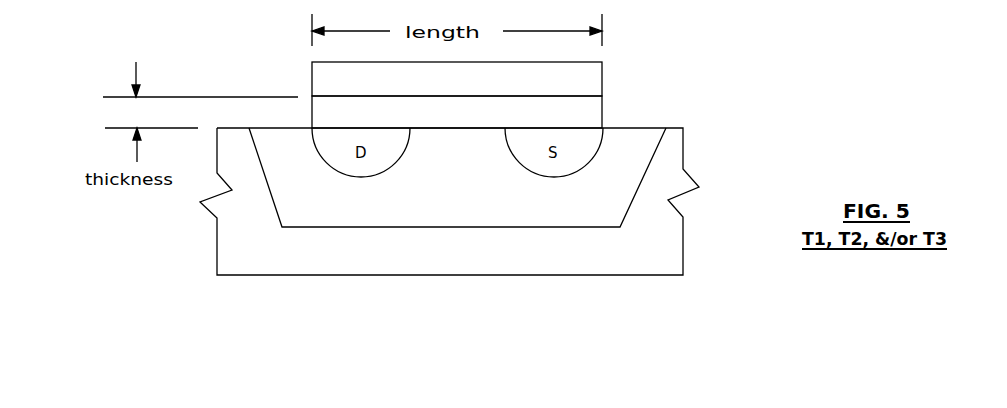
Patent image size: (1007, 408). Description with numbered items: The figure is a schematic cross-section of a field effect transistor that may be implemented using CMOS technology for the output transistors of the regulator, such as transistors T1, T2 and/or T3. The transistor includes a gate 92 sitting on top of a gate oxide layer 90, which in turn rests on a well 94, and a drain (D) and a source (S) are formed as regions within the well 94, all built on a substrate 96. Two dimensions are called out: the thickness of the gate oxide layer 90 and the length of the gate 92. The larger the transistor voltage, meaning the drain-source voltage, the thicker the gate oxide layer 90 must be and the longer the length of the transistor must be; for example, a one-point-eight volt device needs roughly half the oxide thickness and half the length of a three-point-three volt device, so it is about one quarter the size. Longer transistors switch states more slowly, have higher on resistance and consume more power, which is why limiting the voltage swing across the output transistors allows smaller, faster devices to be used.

The gate 92 is at (457, 79).
The gate oxide layer 90 is at (457, 112).
The well 94 is at (457, 177).
The substrate 96 is at (449, 201).